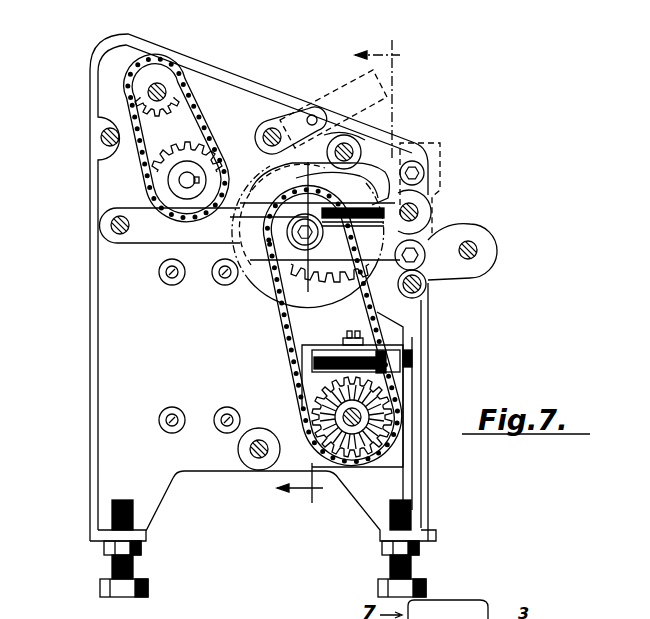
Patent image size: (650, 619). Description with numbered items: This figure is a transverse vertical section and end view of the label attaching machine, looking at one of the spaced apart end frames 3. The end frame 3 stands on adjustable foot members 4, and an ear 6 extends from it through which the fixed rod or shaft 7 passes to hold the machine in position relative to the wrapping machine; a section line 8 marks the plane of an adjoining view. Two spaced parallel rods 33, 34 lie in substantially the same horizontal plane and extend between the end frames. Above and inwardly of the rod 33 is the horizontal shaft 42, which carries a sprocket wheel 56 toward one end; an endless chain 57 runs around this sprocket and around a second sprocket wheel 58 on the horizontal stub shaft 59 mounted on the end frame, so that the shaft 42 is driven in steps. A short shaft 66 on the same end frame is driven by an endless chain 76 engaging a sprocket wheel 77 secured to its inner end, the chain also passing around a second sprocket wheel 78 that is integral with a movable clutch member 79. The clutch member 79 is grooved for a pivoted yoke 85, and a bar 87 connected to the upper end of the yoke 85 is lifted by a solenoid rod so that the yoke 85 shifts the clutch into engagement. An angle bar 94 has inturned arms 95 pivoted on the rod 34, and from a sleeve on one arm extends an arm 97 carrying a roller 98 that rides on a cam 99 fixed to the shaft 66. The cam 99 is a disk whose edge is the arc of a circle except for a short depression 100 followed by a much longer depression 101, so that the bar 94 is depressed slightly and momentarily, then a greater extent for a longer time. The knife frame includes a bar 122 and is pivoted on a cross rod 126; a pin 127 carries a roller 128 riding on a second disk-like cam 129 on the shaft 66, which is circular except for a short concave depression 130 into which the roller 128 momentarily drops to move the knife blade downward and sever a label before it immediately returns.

The end frame 3 is at (105, 315).
The adjustable foot member 4 is at (412, 568).
The ear 6 is at (448, 233).
The rod or shaft 7 is at (480, 246).
The section line 8 is at (338, 273).
The rod 33 is at (105, 146).
The rod 34 is at (265, 130).
The horizontal shaft 42 is at (140, 96).
The sprocket wheel 56 is at (170, 102).
The endless chain 57 is at (200, 129).
The second sprocket wheel 58 is at (187, 161).
The horizontal stub shaft 59 is at (187, 188).
The short shaft 66 is at (204, 226).
The endless chain 76 is at (283, 323).
The sprocket wheel 77 is at (260, 266).
The second sprocket wheel 78 is at (397, 378).
The movable clutch member 79 is at (375, 432).
The yoke 85 is at (317, 373).
The bar 87 is at (377, 333).
The angle bar 94 is at (372, 94).
The inturned arm 95 is at (280, 118).
The arm 97 is at (339, 135).
The roller 98 is at (352, 135).
The cam 99 is at (332, 307).
The short depression or recess 100 is at (300, 160).
The longer depression or recess 101 is at (272, 198).
The bar 122 is at (443, 147).
The cross rod 126 is at (420, 208).
The pin 127 is at (297, 163).
The roller 128 is at (345, 168).
The second disk-like cam 129 is at (226, 284).
The concave depression 130 is at (320, 227).